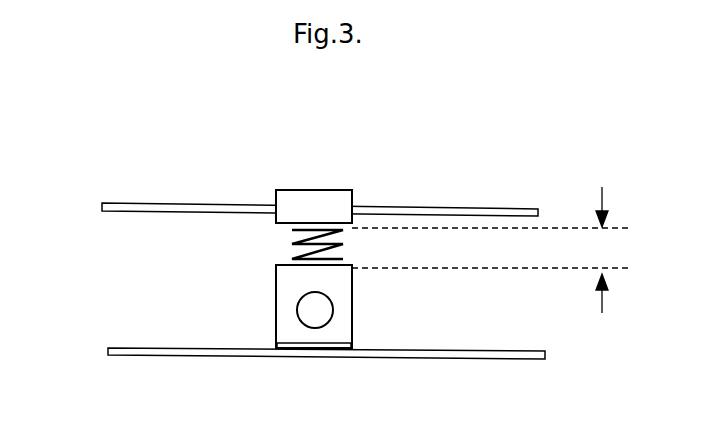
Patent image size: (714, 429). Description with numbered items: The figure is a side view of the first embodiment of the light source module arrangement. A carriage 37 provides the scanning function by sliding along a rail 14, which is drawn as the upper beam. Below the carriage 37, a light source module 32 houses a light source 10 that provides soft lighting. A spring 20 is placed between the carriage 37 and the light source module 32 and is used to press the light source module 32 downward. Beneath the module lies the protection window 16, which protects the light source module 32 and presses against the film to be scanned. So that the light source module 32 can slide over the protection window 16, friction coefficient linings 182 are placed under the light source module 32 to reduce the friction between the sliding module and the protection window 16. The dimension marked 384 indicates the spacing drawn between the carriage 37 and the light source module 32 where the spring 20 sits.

The rail 14 is at (112, 202).
The protection window 16 is at (107, 353).
The carriage 37 is at (300, 200).
The spring 20 is at (350, 244).
The light source module 32 is at (293, 274).
The light source 10 is at (333, 309).
The friction coefficient lining 182 is at (350, 347).
The gap distance 384 is at (515, 250).